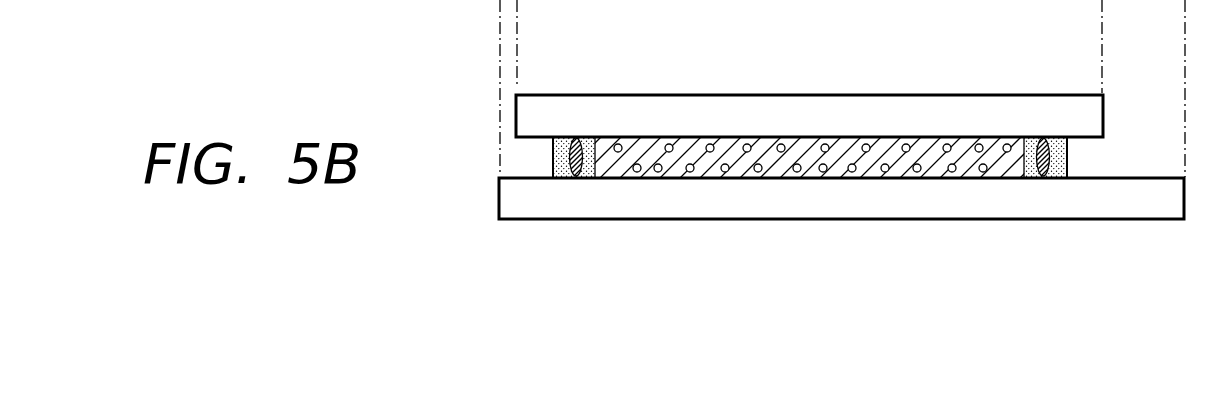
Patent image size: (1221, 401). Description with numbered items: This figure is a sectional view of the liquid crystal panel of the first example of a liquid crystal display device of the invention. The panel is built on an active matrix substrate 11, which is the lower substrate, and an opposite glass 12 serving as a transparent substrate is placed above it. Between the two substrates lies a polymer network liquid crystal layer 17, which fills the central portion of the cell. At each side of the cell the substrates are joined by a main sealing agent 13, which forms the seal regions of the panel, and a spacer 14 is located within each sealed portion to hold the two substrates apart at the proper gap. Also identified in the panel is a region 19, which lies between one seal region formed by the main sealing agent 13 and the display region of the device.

The active matrix substrate 11 is at (1126, 205).
The opposite glass 12 is at (1052, 110).
The main sealing agent 13 is at (564, 136).
The spacer 14 is at (580, 170).
The polymer network liquid crystal layer 17 is at (940, 172).
The region between another seal region and display region 19 is at (787, 0).